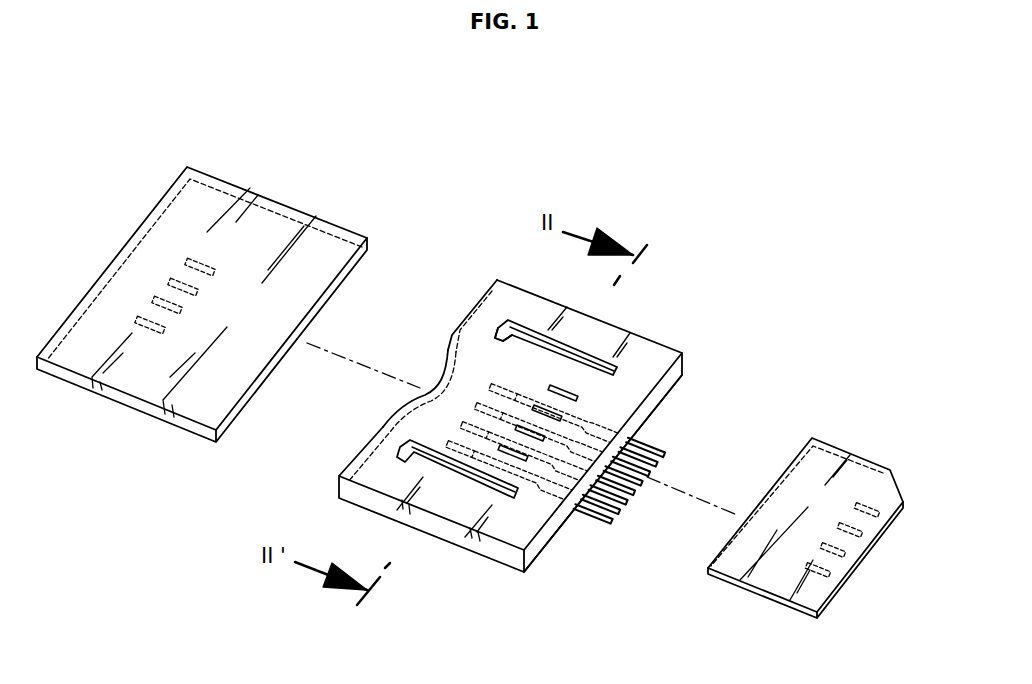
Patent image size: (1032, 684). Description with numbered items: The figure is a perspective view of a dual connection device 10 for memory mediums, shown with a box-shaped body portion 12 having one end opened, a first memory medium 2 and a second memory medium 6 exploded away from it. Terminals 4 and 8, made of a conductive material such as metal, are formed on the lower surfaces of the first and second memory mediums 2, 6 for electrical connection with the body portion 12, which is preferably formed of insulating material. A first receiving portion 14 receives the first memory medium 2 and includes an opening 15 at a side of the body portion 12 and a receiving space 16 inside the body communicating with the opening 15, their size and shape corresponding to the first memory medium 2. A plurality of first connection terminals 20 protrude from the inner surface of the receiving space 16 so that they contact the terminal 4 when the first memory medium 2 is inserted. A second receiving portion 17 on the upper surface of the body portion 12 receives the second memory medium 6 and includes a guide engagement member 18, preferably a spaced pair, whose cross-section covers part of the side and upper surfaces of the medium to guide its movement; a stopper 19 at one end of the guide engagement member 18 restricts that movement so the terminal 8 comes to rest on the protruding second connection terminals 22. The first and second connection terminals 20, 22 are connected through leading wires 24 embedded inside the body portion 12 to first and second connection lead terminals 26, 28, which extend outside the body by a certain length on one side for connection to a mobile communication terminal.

The first memory medium 2 is at (220, 167).
The terminal 4 is at (205, 262).
The second memory medium 6 is at (830, 437).
The terminal 8 is at (864, 505).
The dual connection device 10 is at (497, 187).
The body portion 12 is at (500, 565).
The first receiving portion 14 is at (337, 460).
The opening 15 is at (480, 296).
The receiving space 16 is at (477, 340).
The second receiving portion 17 is at (598, 343).
The guide engagement member 18 is at (590, 317).
The stopper 19 is at (500, 320).
The first connection terminal 20 is at (490, 384).
The second connection terminal 22 is at (580, 392).
The leading wire 24 is at (607, 413).
The first connection lead terminal 26 is at (587, 518).
The second connection lead terminal 28 is at (612, 515).